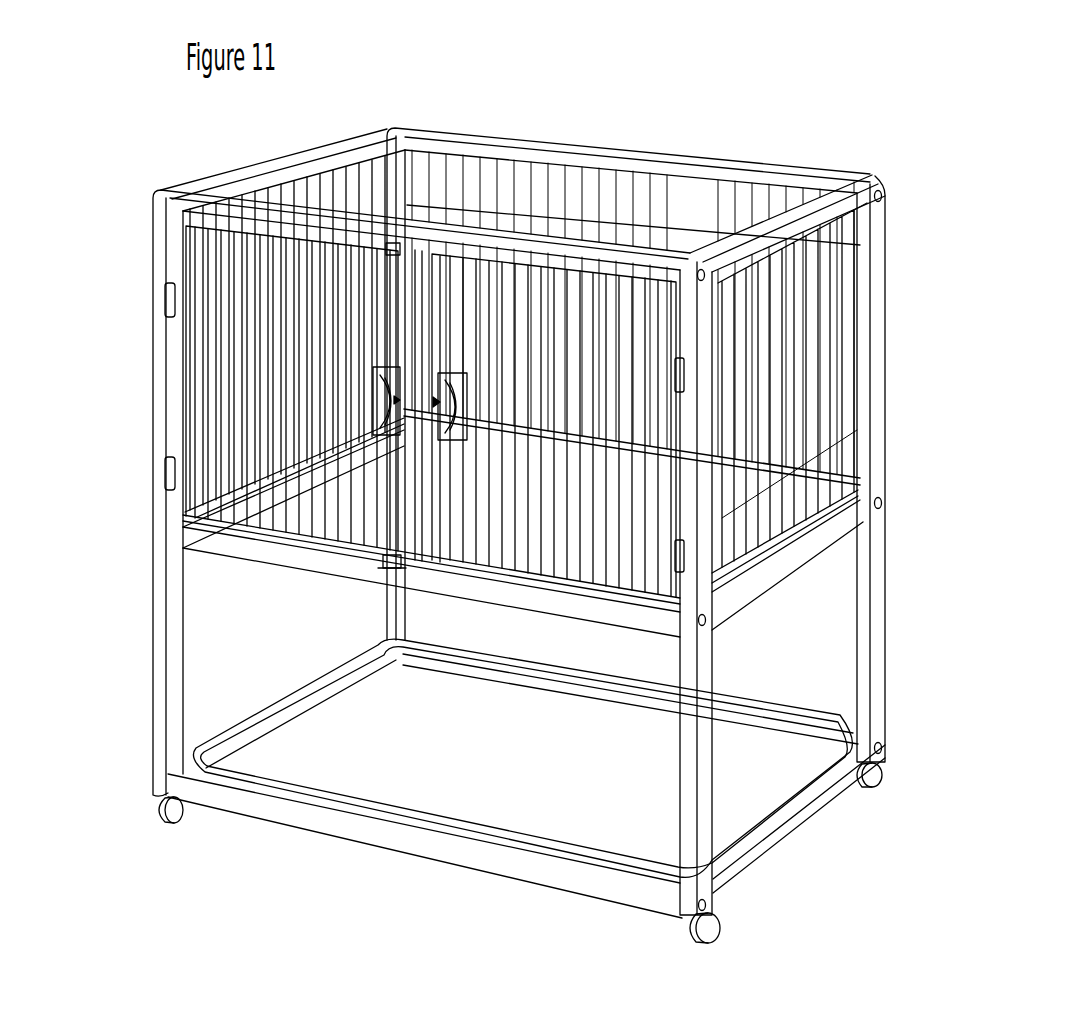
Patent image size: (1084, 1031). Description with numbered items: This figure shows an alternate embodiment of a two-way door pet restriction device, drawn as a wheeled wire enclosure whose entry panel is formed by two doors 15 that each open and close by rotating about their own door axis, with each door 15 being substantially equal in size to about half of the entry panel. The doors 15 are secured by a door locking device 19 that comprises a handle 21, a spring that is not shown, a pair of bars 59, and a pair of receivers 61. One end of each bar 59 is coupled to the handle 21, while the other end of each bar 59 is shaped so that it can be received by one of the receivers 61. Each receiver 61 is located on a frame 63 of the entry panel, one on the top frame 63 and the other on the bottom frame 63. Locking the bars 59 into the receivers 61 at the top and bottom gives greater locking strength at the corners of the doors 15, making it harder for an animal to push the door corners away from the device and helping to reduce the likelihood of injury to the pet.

The door 15 is at (270, 270).
The door locking device 19 is at (352, 380).
The handle 21 is at (457, 372).
The bar 59 is at (297, 240).
The receiver 61 is at (388, 243).
The frame 63 is at (662, 268).